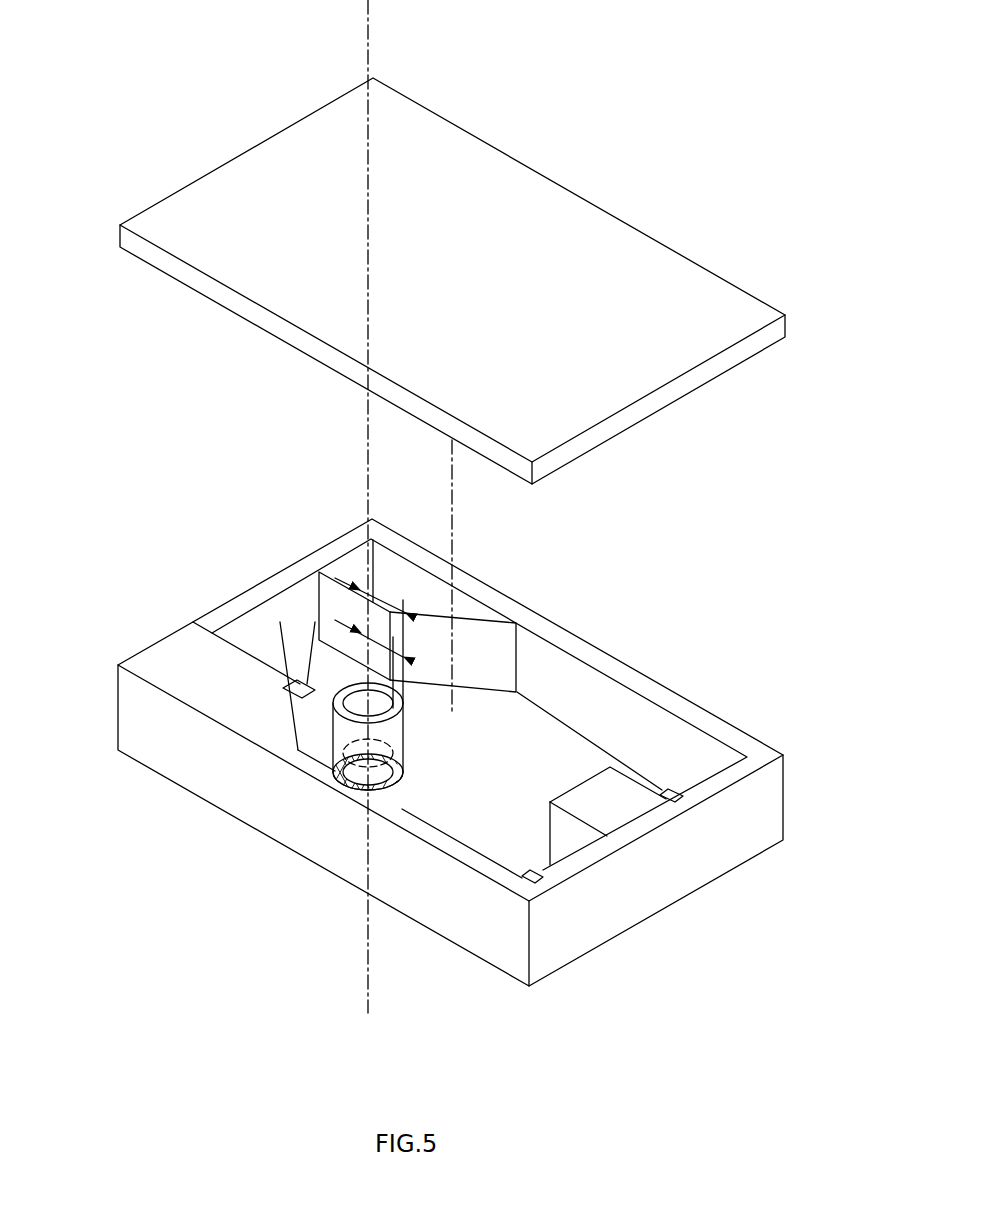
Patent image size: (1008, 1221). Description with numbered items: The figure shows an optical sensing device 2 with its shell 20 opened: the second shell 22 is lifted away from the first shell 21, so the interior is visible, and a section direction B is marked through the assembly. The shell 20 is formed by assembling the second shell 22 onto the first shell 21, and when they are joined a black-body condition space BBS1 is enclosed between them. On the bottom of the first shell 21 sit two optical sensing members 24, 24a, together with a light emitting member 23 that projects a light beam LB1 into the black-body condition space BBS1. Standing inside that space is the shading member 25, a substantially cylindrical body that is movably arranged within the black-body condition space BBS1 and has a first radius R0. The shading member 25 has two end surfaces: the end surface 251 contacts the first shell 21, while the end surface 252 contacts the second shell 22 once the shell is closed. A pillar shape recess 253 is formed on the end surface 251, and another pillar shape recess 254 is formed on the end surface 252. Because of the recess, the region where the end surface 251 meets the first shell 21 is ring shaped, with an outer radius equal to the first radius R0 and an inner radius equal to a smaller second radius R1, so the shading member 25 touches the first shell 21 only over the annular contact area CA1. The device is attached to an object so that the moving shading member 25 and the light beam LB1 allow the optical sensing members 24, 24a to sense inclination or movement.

The optical sensing device 2 is at (653, 145).
The second shell 22 is at (705, 292).
The shell 20 is at (763, 533).
The first shell 21 is at (738, 745).
The light emitting member 23 is at (283, 697).
The optical sensing member 24 is at (553, 883).
The optical sensing member 24a is at (687, 796).
The shading member 25 is at (425, 720).
The end surface 251 is at (403, 795).
The end surface 252 is at (337, 700).
The pillar shape recess 253 is at (385, 752).
The pillar shape recess 254 is at (333, 718).
The black-body condition space BBS1 is at (610, 711).
The light beam LB1 is at (272, 652).
The contact area CA1 is at (363, 790).
The first radius R0 is at (403, 600).
The second radius R1 is at (358, 588).
The B-B section direction B is at (362, 7).